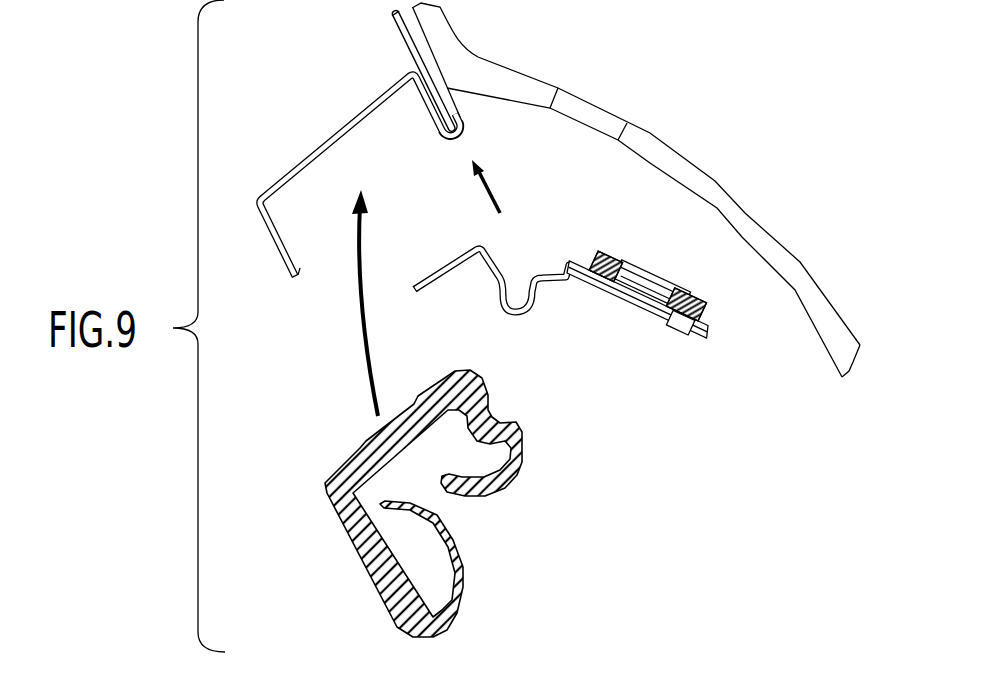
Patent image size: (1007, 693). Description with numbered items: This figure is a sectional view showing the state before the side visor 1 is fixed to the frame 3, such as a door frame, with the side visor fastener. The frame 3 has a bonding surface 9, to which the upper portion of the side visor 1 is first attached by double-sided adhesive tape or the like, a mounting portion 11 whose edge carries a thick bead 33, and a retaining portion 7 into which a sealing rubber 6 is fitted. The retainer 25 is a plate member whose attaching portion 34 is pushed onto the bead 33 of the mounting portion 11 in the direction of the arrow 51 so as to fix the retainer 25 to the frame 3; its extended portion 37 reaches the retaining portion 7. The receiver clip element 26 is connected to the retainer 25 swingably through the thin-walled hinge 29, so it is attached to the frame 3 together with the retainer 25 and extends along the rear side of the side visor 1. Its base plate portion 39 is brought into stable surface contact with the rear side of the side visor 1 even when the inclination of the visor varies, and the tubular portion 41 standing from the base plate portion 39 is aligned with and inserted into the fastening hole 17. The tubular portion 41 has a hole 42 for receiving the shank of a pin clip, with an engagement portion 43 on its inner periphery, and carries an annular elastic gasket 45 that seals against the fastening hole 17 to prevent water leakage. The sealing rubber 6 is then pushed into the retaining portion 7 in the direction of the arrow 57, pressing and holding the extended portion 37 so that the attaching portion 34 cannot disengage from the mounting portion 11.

The side visor 1 is at (704, 158).
The frame 3 is at (318, 129).
The sealing rubber 6 is at (327, 487).
The retaining portion 7 is at (369, 178).
The bonding surface 9 is at (427, 40).
The mounting portion 11 is at (450, 100).
The fastening hole 17 is at (590, 107).
The retainer 25 is at (470, 239).
The receiver clip element 26 is at (638, 248).
The thin-walled hinge 29 is at (552, 273).
The thick bead 33 is at (441, 132).
The attaching portion 34 is at (507, 314).
The extended portion 37 is at (428, 274).
The base plate portion 39 is at (673, 330).
The tubular portion 41 is at (603, 258).
The hole 42 is at (660, 283).
The engagement portion 43 is at (645, 293).
The annular elastic gasket 45 is at (702, 309).
The arrow 51 is at (488, 184).
The arrow 57 is at (349, 333).